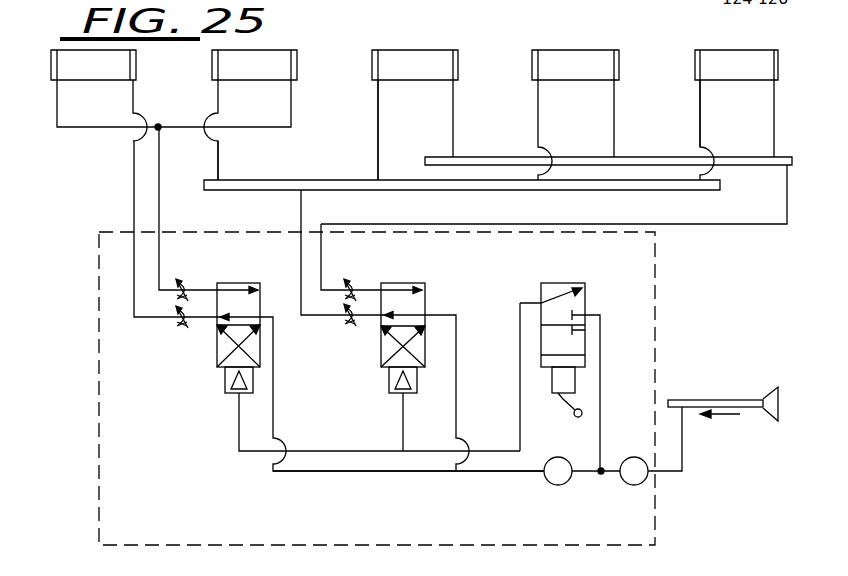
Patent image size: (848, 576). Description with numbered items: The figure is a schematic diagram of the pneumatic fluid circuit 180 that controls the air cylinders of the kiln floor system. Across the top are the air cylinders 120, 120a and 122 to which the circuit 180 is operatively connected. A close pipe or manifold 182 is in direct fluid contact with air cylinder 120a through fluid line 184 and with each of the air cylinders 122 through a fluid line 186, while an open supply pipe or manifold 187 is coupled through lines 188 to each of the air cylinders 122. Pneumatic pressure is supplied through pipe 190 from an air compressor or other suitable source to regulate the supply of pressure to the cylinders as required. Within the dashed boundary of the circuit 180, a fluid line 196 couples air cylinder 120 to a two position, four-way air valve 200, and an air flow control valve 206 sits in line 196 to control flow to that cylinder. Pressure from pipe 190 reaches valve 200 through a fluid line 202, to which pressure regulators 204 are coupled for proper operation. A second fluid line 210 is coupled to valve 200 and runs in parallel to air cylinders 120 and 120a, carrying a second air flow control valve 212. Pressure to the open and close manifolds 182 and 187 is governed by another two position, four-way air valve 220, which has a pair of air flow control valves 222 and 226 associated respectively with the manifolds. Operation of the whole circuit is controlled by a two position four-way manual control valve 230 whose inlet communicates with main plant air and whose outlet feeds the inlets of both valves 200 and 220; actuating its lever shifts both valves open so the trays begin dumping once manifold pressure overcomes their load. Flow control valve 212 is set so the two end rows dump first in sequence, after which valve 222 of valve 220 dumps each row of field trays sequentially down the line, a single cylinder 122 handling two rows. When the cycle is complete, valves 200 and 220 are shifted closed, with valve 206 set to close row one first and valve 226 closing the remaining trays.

The air cylinder 120 is at (75, 65).
The air cylinder 120a is at (273, 65).
The air cylinders 122 is at (407, 65).
The close pipe or manifold 182 is at (462, 198).
The fluid line 184 is at (218, 158).
The fluid line 186 is at (378, 143).
The open supply pipe or manifold 187 is at (780, 150).
The lines 188 is at (485, 135).
The pipe 190 is at (722, 400).
The fluid line 196 is at (134, 205).
The two position, four-way air valve 200 is at (217, 363).
The fluid line 202 is at (416, 473).
The pressure regulators 204 is at (560, 485).
The air flow control valve 206 is at (183, 320).
The second fluid line 210 is at (159, 190).
The second air flow control valve 212 is at (183, 285).
The fluid circuit 180 is at (97, 332).
The two position, four-way air valve 220 is at (425, 302).
The air flow control valve 222 is at (348, 283).
The air flow control valve 226 is at (350, 325).
The two position four-way manual control valve 230 is at (580, 307).